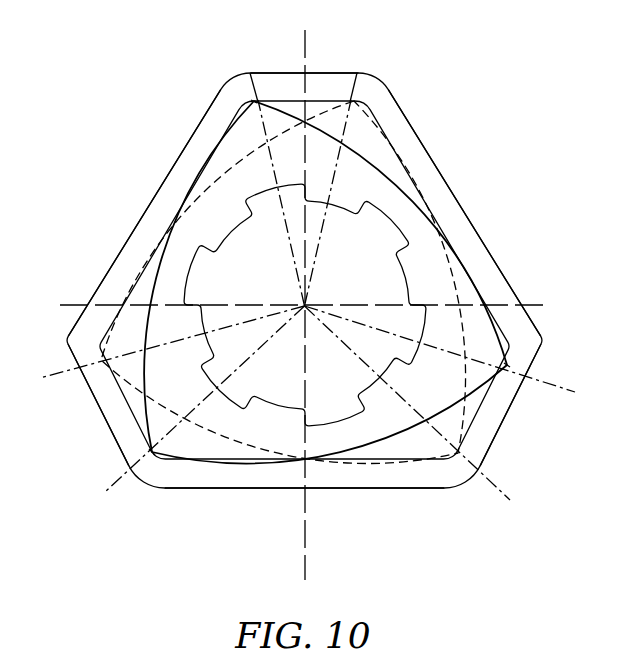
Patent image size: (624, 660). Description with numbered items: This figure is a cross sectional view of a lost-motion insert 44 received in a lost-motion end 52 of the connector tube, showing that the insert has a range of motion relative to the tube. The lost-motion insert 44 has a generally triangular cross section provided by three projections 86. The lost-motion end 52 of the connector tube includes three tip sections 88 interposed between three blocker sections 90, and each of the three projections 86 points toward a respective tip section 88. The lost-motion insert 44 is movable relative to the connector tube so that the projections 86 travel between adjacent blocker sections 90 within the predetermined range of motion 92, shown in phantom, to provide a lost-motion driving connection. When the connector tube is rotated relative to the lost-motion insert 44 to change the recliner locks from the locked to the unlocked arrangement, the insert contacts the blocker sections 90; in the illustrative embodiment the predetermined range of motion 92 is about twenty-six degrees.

The lost-motion end 52 is at (134, 164).
The lost-motion insert 44 is at (399, 185).
The projection 86 is at (239, 102).
The tip section 88 is at (333, 65).
The blocker section 90 is at (132, 223).
The predetermined range of motion 92 is at (353, 128).